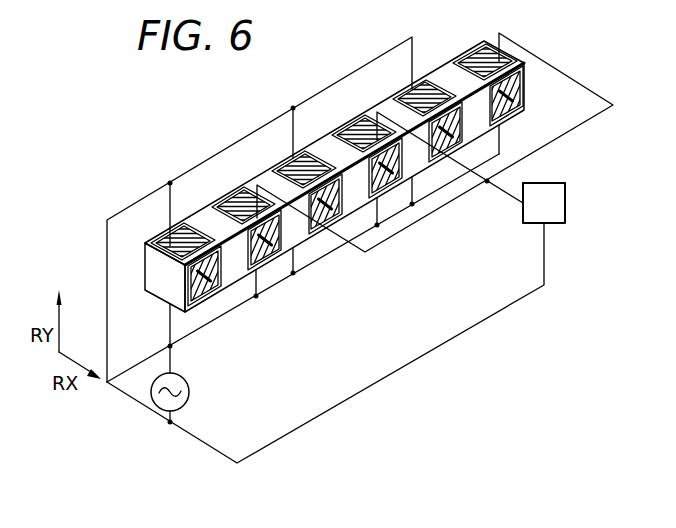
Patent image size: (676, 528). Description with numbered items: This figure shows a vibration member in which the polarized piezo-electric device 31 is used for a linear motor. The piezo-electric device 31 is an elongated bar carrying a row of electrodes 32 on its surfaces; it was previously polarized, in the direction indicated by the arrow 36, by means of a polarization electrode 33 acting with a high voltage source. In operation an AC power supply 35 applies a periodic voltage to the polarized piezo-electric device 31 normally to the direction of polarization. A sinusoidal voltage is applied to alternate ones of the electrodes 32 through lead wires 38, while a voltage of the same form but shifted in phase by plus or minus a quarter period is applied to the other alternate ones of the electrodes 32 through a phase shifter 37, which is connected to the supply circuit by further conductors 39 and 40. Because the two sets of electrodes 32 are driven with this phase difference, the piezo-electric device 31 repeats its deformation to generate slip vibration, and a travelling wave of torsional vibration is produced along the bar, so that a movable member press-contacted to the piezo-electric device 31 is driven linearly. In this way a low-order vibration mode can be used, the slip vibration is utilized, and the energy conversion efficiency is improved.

The piezo-electric device 31 is at (160, 288).
The electrodes 32 is at (190, 230).
The polarization electrode 33 is at (220, 267).
The AC power supply 35 is at (190, 391).
The arrow 36 is at (205, 278).
The phase shifter 37 is at (336, 323).
The lead wires 38 is at (153, 192).
The lead line 39 is at (428, 218).
The lead line 40 is at (294, 275).